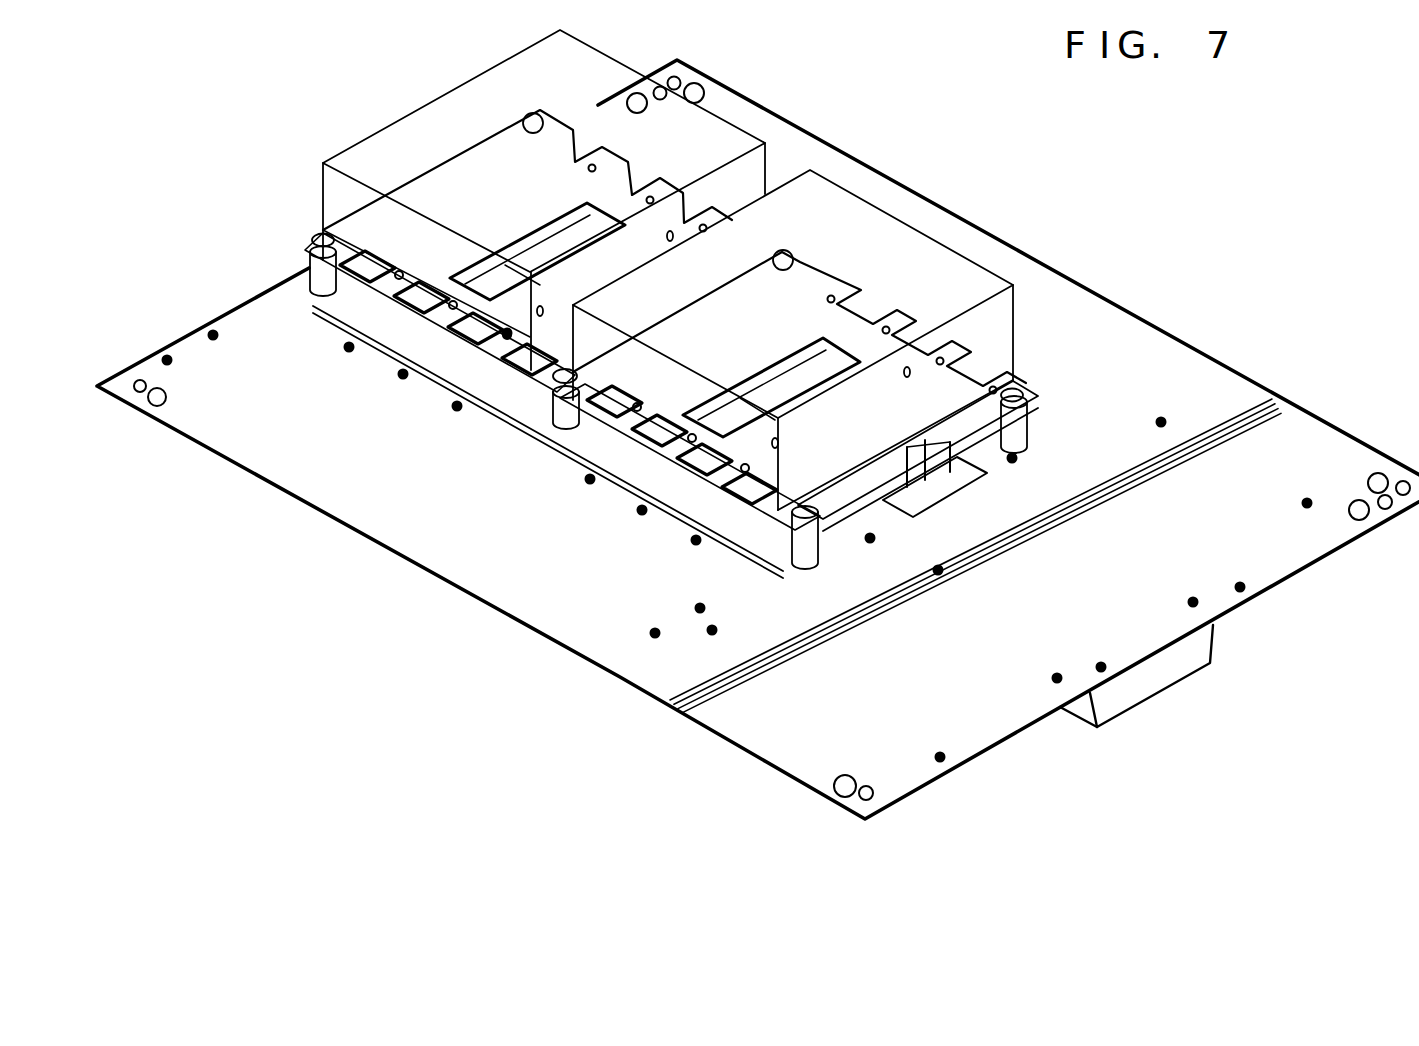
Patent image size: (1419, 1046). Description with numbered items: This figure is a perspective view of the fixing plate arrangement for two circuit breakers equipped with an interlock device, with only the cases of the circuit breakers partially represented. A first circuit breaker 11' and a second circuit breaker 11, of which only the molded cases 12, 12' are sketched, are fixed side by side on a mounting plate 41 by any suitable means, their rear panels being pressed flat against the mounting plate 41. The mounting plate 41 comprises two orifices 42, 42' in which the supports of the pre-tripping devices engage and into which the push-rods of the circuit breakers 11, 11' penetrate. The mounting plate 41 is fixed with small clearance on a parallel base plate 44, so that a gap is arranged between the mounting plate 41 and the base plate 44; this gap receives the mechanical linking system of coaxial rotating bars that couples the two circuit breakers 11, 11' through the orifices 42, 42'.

The second circuit breaker 11 is at (621, 208).
The molded case 12 is at (600, 200).
The first circuit breaker 11' is at (838, 330).
The molded case 12' is at (865, 340).
The mounting plate 41 is at (735, 492).
The orifice 42 is at (387, 400).
The orifice 42' is at (637, 488).
The base plate 44 is at (503, 565).